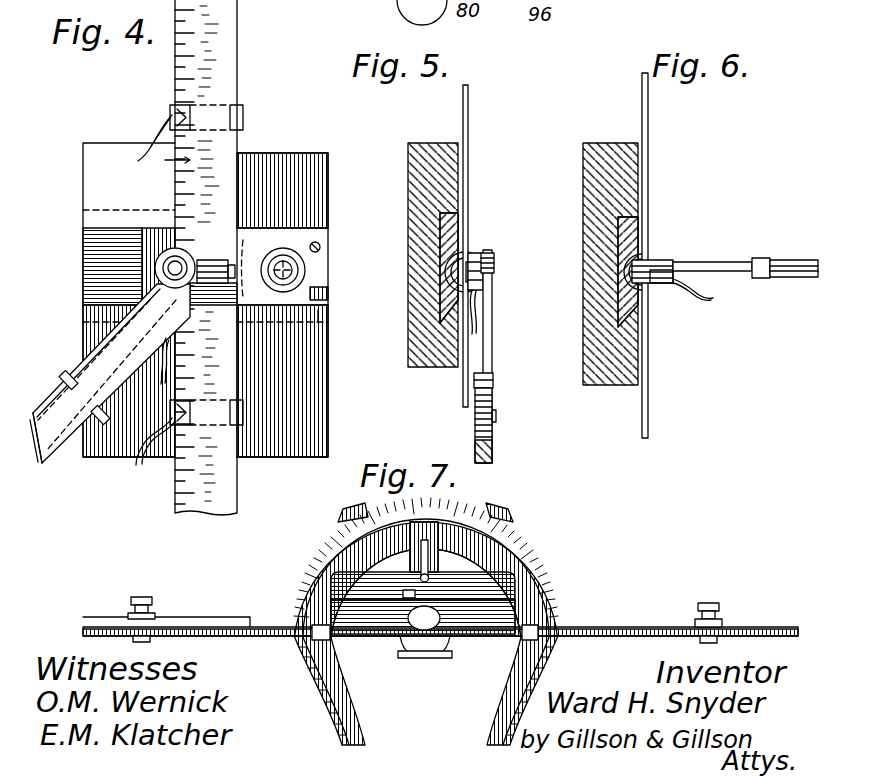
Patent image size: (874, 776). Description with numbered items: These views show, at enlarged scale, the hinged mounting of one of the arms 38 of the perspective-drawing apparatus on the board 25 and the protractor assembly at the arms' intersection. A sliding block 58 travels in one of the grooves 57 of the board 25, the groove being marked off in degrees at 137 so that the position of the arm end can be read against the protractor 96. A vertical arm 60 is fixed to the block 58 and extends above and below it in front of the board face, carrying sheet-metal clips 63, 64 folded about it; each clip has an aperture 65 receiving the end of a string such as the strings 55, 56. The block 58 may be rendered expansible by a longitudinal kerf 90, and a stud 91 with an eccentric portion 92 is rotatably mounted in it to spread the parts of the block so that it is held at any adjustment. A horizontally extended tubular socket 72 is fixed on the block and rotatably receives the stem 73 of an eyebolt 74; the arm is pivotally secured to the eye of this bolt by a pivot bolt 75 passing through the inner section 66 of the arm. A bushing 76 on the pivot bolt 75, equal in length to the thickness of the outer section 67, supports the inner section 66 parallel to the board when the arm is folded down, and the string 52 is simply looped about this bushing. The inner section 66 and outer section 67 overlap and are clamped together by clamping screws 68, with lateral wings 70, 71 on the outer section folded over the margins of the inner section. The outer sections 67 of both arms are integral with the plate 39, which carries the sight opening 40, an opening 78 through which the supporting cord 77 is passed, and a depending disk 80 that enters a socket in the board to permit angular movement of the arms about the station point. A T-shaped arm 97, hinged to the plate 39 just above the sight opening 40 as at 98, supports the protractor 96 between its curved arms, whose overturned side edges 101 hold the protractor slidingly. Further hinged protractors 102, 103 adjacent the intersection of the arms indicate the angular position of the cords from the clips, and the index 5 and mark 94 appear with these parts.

In FIG. 4, the index mark 5 is at (197, 279).
In FIG. 4, the board 25 is at (282, 305).
In FIG. 5, the board 25 is at (440, 143).
In FIG. 4, the arm 38 is at (50, 452).
In FIG. 5, the arm 38 is at (492, 400).
In FIG. 7, the plate 39 is at (452, 586).
In FIG. 7, the sight opening 40 is at (408, 619).
In FIG. 4, the string 52 is at (172, 370).
In FIG. 5, the string 52 is at (478, 321).
In FIG. 6, the string 52 is at (707, 300).
In FIG. 4, the string 55 is at (158, 136).
In FIG. 4, the string 56 is at (147, 460).
In FIG. 4, the grooves 57 is at (82, 276).
In FIG. 5, the grooves 57 is at (432, 299).
In FIG. 6, the grooves 57 is at (620, 289).
In FIG. 4, the sliding block 58 is at (276, 240).
In FIG. 5, the sliding block 58 is at (462, 228).
In FIG. 6, the sliding block 58 is at (641, 237).
In FIG. 4, the vertical arm 60 is at (180, 457).
In FIG. 5, the vertical arm 60 is at (469, 366).
In FIG. 6, the vertical arm 60 is at (648, 361).
In FIG. 4, the clip 63 is at (243, 110).
In FIG. 4, the clip 64 is at (230, 406).
In FIG. 4, the aperture 65 is at (170, 111).
In FIG. 4, the inner section 66 is at (111, 373).
In FIG. 5, the inner section 66 is at (492, 288).
In FIG. 6, the inner section 66 is at (724, 263).
In FIG. 7, the inner section 66 is at (172, 619).
In FIG. 5, the outer section 67 is at (492, 455).
In FIG. 6, the outer section 67 is at (770, 279).
In FIG. 7, the outer section 67 is at (247, 627).
In FIG. 7, the clamping screw 68 is at (141, 597).
In FIG. 4, the lateral wing 70 is at (64, 375).
In FIG. 5, the lateral wing 70 is at (493, 380).
In FIG. 4, the lateral wing 71 is at (107, 413).
In FIG. 5, the lateral wing 71 is at (496, 417).
In FIG. 4, the tubular socket 72 is at (207, 260).
In FIG. 4, the stem 73 is at (268, 263).
In FIG. 4, the eyebolt 74 is at (213, 297).
In FIG. 5, the eyebolt 74 is at (469, 256).
In FIG. 6, the eyebolt 74 is at (667, 284).
In FIG. 4, the pivot bolt 75 is at (178, 262).
In FIG. 5, the bushing 76 is at (490, 258).
In FIG. 6, the bushing 76 is at (668, 262).
In FIG. 7, the cord 77 is at (429, 557).
In FIG. 7, the opening 78 is at (403, 593).
In FIG. 7, the disk 80 is at (423, 659).
In FIG. 4, the longitudinal kerf 90 is at (328, 294).
In FIG. 4, the stud 91 is at (262, 314).
In FIG. 4, the eccentric portion 92 is at (306, 322).
In FIG. 7, the protractor arc 94 is at (466, 506).
In FIG. 7, the protractor 96 is at (546, 593).
In FIG. 7, the arm 97 is at (410, 556).
In FIG. 7, the hinge 98 is at (446, 583).
In FIG. 7, the overturned side edges 101 is at (440, 501).
In FIG. 7, the protractor 102 is at (334, 662).
In FIG. 7, the protractor 103 is at (538, 655).
In FIG. 4, the degree markings 137 is at (82, 322).